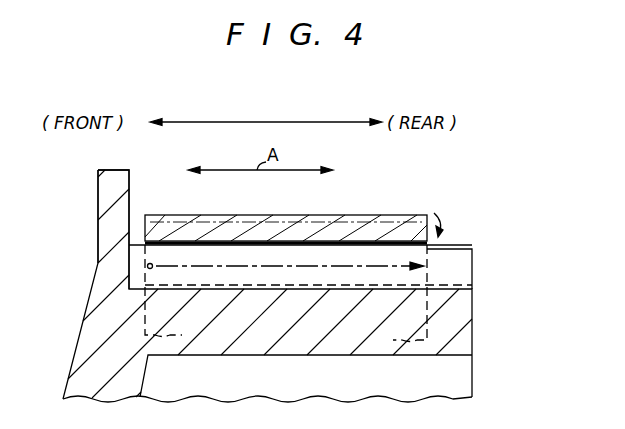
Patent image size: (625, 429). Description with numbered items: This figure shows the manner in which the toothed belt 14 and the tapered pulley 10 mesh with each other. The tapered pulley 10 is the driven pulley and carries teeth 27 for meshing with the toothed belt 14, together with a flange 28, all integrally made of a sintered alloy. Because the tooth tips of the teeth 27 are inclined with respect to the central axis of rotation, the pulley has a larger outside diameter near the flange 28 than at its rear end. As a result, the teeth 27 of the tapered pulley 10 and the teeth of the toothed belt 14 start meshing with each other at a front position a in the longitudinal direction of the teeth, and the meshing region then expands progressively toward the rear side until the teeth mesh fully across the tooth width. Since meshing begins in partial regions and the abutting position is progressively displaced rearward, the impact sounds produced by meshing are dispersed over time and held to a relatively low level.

The tapered pulley 10 is at (488, 318).
The toothed belt 14 is at (389, 222).
The teeth 27 is at (457, 257).
The flange 28 is at (115, 195).
The front position a is at (153, 262).